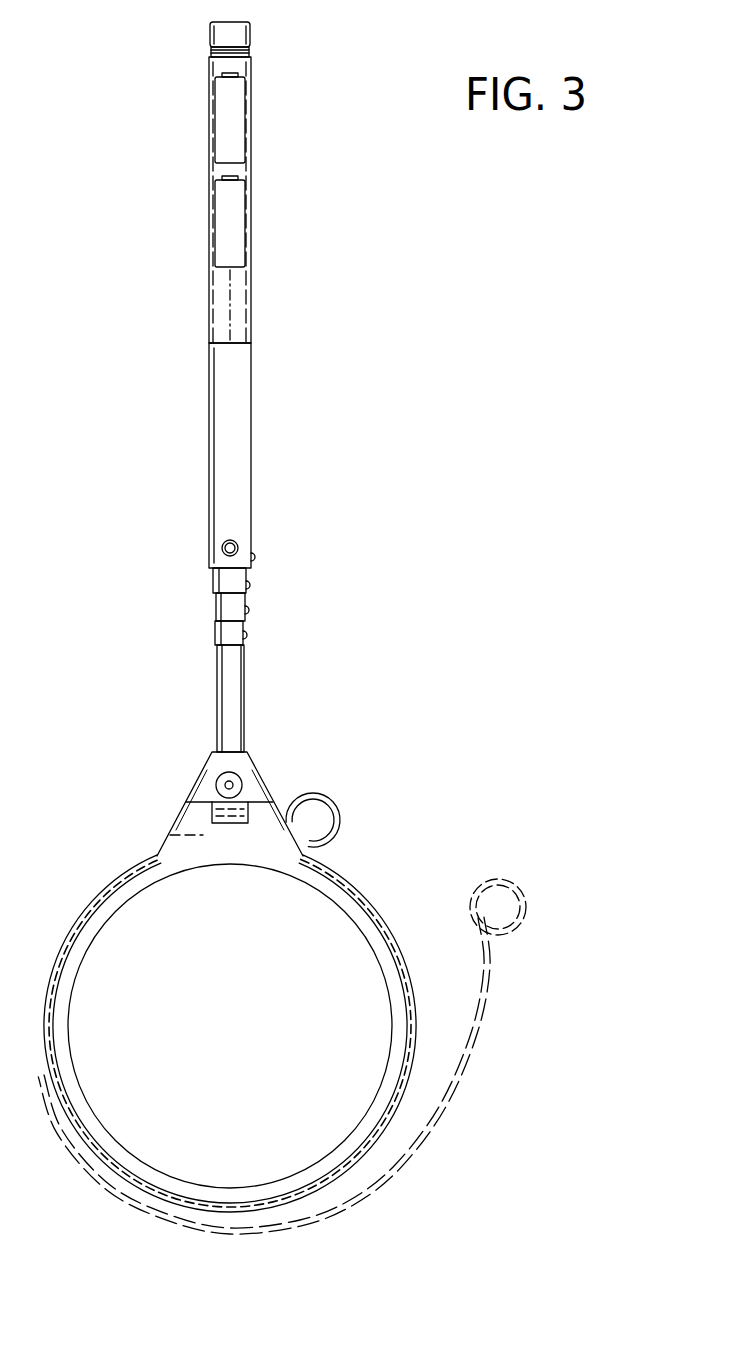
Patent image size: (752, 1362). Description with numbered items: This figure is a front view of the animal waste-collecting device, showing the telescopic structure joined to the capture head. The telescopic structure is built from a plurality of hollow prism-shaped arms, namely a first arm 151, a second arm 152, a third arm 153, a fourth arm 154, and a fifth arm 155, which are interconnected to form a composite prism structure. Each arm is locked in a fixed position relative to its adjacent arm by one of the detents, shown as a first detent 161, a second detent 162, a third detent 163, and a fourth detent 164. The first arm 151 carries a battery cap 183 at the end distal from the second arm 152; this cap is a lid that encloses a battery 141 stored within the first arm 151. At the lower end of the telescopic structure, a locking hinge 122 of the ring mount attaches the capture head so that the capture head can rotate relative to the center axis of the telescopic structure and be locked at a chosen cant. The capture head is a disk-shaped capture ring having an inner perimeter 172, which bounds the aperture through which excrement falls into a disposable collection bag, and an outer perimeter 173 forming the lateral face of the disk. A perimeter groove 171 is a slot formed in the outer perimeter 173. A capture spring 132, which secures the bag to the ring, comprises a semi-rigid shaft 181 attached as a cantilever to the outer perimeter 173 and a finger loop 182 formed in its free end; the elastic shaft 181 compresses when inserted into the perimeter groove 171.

The battery cap 183 is at (251, 33).
The battery 141 is at (228, 128).
The first arm 151 is at (209, 457).
The second arm 152 is at (213, 580).
The third arm 153 is at (216, 607).
The fourth arm 154 is at (216, 633).
The fifth arm 155 is at (220, 708).
The first detent 161 is at (256, 557).
The second detent 162 is at (250, 584).
The third detent 163 is at (249, 610).
The fourth detent 164 is at (247, 635).
The locking hinge 122 is at (229, 823).
The perimeter groove 171 is at (393, 946).
The inner perimeter 172 is at (78, 1086).
The outer perimeter 173 is at (178, 1200).
The semi-rigid shaft 181 is at (527, 906).
The finger loop 182 is at (478, 1022).
The capture spring 132 is at (482, 1052).